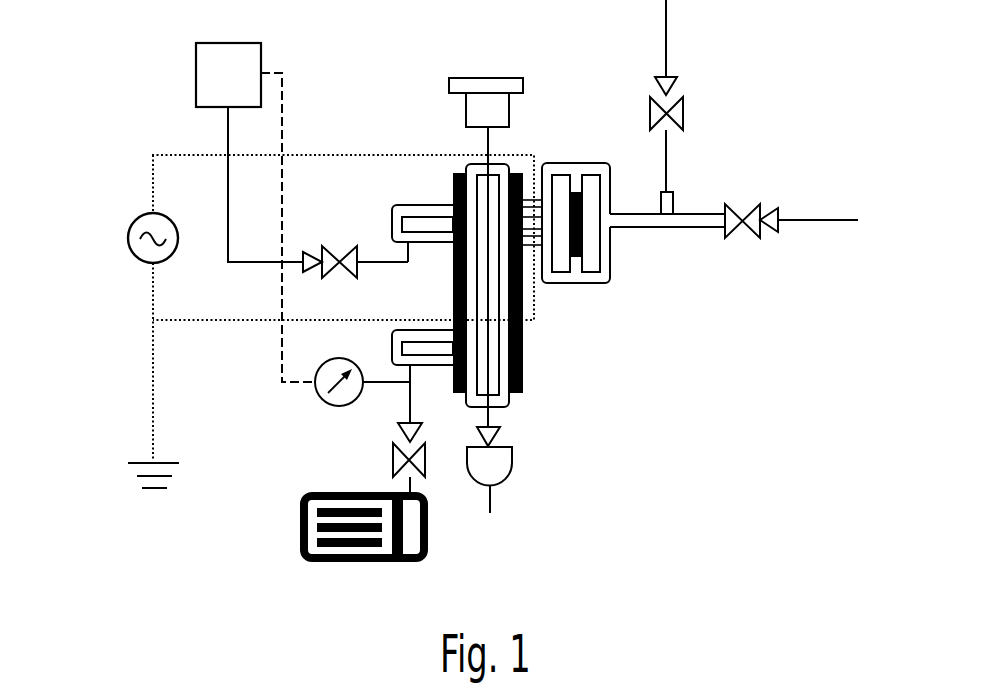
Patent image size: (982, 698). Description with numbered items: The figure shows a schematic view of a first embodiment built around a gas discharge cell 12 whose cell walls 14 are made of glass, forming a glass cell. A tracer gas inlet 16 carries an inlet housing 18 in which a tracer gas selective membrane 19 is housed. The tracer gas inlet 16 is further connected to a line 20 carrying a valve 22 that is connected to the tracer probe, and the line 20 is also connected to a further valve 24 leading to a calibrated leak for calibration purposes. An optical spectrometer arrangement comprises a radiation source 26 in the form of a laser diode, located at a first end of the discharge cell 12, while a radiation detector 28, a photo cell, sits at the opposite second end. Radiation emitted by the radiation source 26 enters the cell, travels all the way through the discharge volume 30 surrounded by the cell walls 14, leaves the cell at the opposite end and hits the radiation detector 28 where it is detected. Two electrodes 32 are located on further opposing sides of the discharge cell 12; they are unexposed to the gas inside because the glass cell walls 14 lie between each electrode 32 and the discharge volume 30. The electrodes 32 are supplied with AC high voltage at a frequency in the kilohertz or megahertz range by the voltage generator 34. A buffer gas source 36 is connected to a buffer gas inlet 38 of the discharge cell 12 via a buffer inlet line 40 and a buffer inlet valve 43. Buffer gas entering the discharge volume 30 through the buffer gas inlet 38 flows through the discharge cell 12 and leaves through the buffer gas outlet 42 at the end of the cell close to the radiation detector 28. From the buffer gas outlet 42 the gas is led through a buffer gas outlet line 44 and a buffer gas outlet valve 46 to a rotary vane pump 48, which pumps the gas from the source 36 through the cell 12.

The gas discharge cell 12 is at (540, 428).
The cell walls 14 is at (470, 205).
The tracer gas inlet 16 is at (560, 212).
The inlet housing 18 is at (627, 318).
The tracer gas selective membrane 19 is at (585, 242).
The line 20 is at (688, 227).
The valve 22 is at (743, 210).
The further valve 24 is at (728, 113).
The radiation source 26 is at (488, 103).
The radiation detector 28 is at (538, 568).
The discharge volume 30 is at (620, 380).
The electrodes 32 is at (453, 267).
The voltage generator 34 is at (128, 227).
The buffer gas source 36 is at (216, 73).
The buffer gas inlet 38 is at (413, 205).
The buffer inlet line 40 is at (228, 185).
The buffer gas outlet 42 is at (468, 570).
The buffer inlet valve 43 is at (338, 258).
The buffer gas outlet line 44 is at (405, 403).
The buffer gas outlet valve 46 is at (393, 461).
The rotary vane pump 48 is at (303, 558).